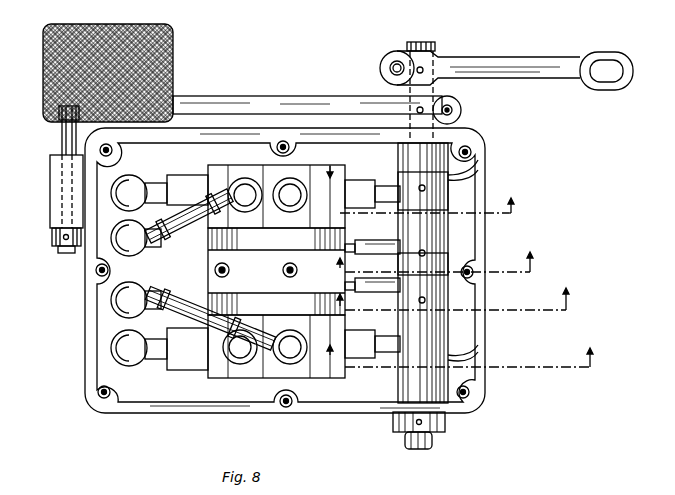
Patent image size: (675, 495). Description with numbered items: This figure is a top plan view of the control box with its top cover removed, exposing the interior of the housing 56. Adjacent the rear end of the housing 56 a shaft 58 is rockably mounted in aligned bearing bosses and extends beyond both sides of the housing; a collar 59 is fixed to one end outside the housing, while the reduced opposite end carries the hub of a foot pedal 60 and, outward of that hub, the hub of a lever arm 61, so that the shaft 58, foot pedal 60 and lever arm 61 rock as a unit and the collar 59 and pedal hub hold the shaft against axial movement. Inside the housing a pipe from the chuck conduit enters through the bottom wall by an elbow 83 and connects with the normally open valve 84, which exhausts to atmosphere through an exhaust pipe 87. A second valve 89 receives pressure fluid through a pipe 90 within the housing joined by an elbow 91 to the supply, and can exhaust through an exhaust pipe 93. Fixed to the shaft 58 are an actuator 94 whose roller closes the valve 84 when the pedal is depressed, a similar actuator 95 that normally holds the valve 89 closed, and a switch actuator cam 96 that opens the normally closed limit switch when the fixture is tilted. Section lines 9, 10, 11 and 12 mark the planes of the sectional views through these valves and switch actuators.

The housing 56 is at (330, 410).
The shaft 58 is at (424, 44).
The collar 59 is at (448, 416).
The foot pedal 60 is at (287, 107).
The lever arm 61 is at (536, 64).
The elbow 83 is at (141, 245).
The valve 84 is at (248, 163).
The exhaust pipe 87 is at (138, 184).
The valve 89 is at (218, 380).
The pipe 90 is at (196, 320).
The elbow 91 is at (140, 299).
The exhaust pipe 93 is at (138, 363).
The actuator 94 is at (478, 175).
The actuator 95 is at (477, 354).
The switch actuator cam 96 is at (362, 250).
The section line 9- 9 is at (418, 181).
The section line 10- 10 is at (461, 347).
The section line 11- 11 is at (435, 252).
The section line 12- 12 is at (455, 290).